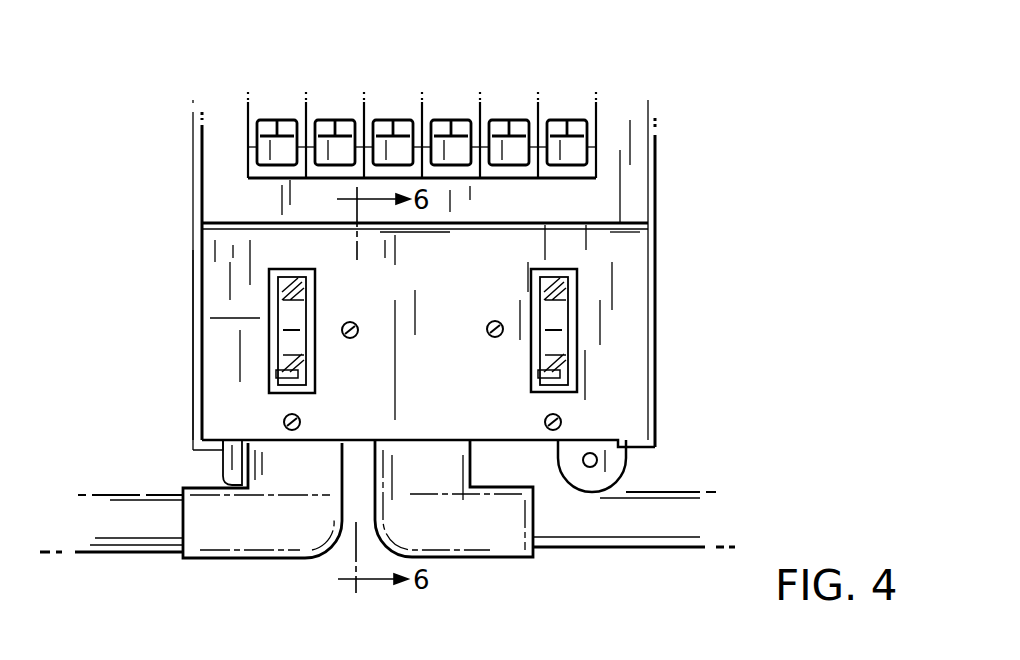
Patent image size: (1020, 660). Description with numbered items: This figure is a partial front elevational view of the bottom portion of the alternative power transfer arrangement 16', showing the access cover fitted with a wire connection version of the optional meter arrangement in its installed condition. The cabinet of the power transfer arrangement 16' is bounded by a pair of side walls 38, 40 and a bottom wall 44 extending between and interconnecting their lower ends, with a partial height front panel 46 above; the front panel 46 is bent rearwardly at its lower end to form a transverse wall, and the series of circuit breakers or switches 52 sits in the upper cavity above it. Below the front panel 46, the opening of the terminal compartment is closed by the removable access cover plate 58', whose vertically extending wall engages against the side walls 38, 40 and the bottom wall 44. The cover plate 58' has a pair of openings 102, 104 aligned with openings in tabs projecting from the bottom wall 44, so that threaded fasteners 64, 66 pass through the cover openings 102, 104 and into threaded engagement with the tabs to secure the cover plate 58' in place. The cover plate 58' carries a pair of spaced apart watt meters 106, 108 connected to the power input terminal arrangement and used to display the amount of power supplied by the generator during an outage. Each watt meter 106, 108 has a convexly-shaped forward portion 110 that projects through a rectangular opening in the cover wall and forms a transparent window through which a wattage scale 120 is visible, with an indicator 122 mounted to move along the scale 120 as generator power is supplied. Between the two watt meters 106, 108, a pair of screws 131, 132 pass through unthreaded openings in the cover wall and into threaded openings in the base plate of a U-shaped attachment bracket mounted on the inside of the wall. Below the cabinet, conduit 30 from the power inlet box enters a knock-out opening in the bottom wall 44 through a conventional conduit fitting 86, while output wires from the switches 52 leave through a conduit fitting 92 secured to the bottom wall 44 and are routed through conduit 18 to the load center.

The power transfer arrangement 16' is at (501, 243).
The conduit 18 is at (657, 527).
The conduit 30 is at (138, 530).
The side wall 38 is at (192, 297).
The side wall 40 is at (657, 327).
The bottom wall 44 is at (484, 443).
The front panel 46 is at (632, 202).
The circuit breakers or switches 52 is at (393, 118).
The removable access cover plate 58' is at (468, 229).
The threaded fastener 64 is at (299, 419).
The threaded fastener 66 is at (548, 417).
The conduit fitting 86 is at (252, 537).
The conduit fitting 92 is at (465, 533).
The opening 102 is at (270, 450).
The opening 104 is at (560, 418).
The watt meter 106 is at (254, 255).
The watt meter 108 is at (518, 255).
The forward portion 110 is at (268, 335).
The wattage scale 120 is at (296, 300).
The indicator 122 is at (290, 375).
The screw 131 is at (357, 334).
The screw 132 is at (492, 322).